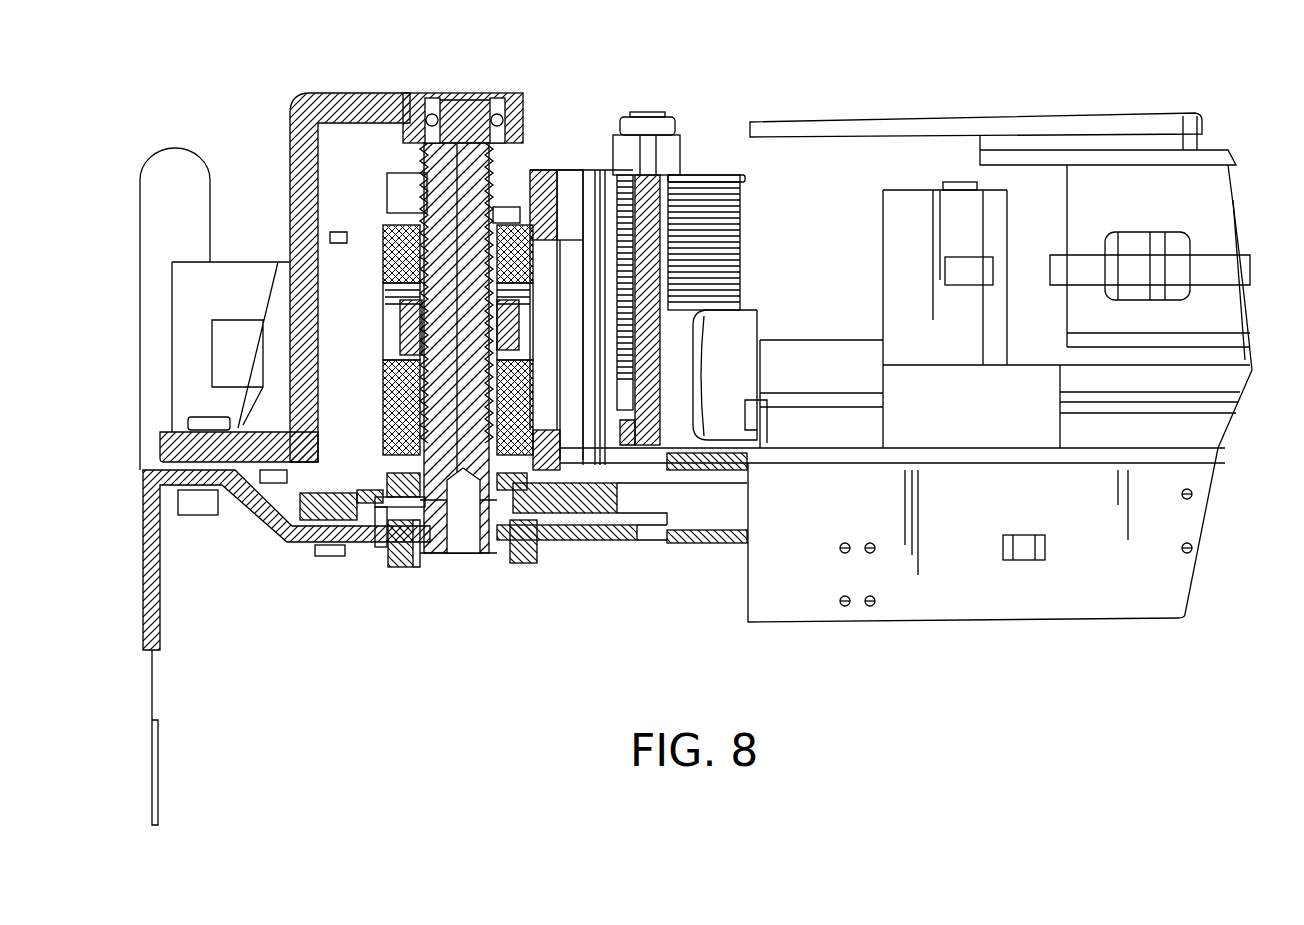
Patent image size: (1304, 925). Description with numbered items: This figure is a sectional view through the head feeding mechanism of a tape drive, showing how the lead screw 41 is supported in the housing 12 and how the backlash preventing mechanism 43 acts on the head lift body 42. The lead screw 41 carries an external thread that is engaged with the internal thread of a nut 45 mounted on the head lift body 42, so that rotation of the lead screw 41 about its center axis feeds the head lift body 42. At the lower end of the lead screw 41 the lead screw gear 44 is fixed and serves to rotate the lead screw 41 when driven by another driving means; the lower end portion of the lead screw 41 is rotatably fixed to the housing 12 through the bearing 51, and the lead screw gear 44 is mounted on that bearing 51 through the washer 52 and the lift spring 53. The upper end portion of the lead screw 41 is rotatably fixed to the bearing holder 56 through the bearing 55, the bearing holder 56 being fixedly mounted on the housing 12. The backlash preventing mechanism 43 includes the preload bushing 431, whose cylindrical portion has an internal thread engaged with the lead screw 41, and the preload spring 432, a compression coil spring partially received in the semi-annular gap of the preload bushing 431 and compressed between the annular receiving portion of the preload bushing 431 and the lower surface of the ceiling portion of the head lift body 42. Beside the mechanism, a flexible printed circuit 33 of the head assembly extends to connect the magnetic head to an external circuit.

The housing 12 is at (296, 548).
The flexible printed circuit 33 is at (178, 147).
The lead screw 41 is at (493, 163).
The head lift body 42 is at (383, 228).
The backlash preventing mechanism 43 is at (542, 250).
The lead screw gear 44 is at (583, 545).
The nut 45 is at (383, 412).
The bearing 51 is at (493, 567).
The washer 52 is at (405, 565).
The lift spring 53 is at (385, 548).
The bearing 55 is at (490, 93).
The bearing holder 56 is at (378, 125).
The preload bushing 431 is at (290, 248).
The preload spring 432 is at (295, 127).